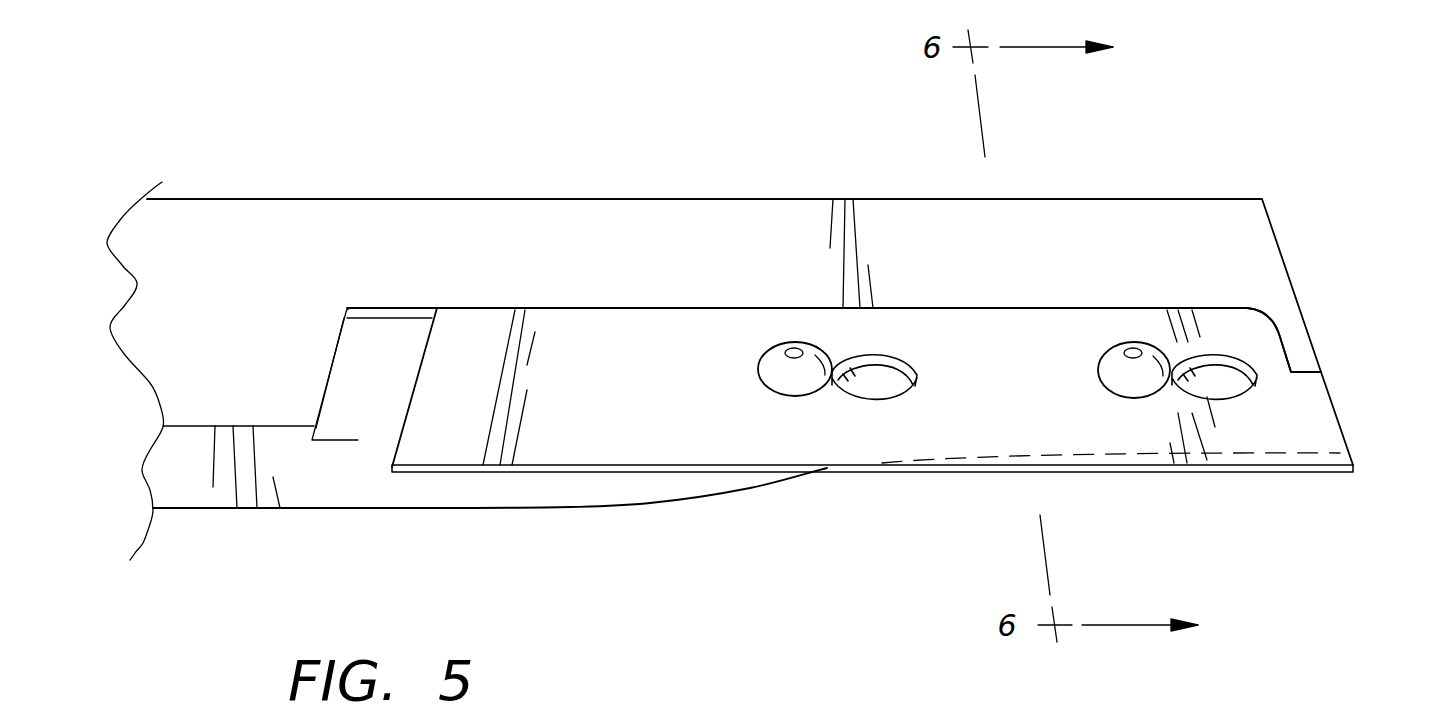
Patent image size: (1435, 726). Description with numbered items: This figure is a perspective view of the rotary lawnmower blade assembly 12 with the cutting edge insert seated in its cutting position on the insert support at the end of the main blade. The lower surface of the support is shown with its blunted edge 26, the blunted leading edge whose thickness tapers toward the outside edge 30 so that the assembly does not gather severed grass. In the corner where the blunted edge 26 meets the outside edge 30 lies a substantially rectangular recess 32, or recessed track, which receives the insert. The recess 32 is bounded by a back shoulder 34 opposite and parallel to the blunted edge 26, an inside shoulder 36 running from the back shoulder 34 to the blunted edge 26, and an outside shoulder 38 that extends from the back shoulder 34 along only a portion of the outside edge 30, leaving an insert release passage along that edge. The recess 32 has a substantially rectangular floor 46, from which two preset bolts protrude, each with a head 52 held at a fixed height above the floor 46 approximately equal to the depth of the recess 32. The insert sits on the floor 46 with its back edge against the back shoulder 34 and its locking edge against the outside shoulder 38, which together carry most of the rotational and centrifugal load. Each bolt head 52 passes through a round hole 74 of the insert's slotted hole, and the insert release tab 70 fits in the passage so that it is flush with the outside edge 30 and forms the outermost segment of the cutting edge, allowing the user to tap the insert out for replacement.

The rotary lawnmower blade assembly 12 is at (689, 178).
The blunted edge 26 is at (1265, 473).
The outside edge 30 is at (1307, 310).
The recess 32 is at (357, 443).
The back shoulder 34 is at (388, 317).
The inside shoulder 36 is at (333, 377).
The outside shoulder 38 is at (1295, 348).
The floor 46 is at (372, 348).
The head 52 is at (765, 387).
The insert release tab 70 is at (1320, 423).
The round hole 74 is at (907, 390).